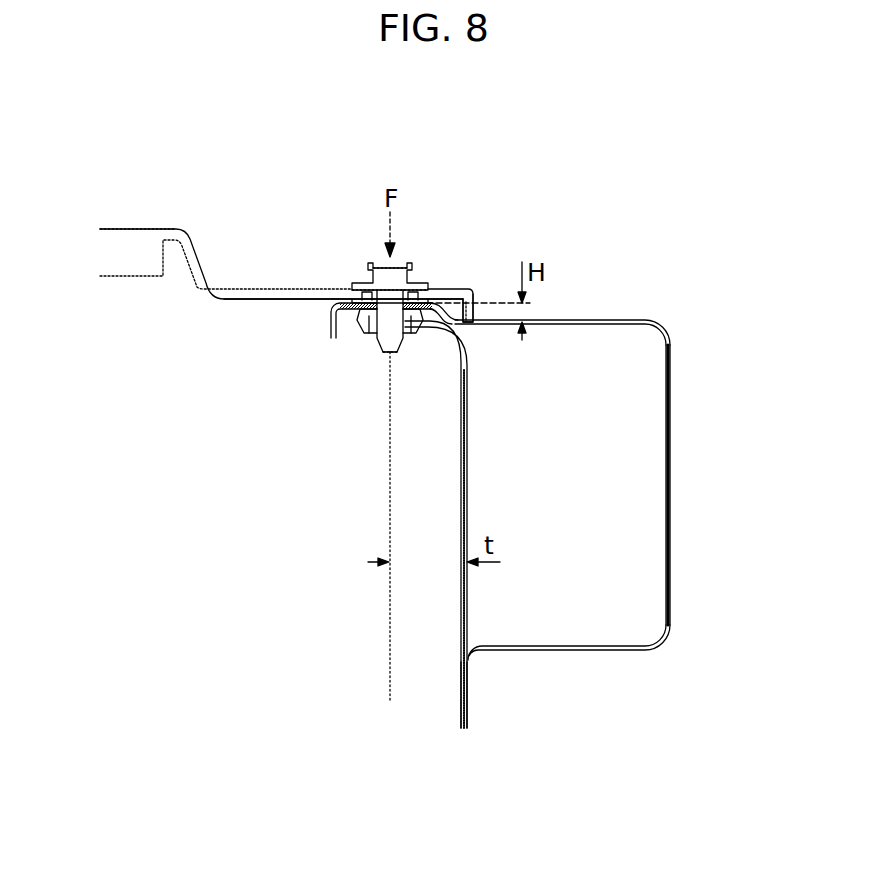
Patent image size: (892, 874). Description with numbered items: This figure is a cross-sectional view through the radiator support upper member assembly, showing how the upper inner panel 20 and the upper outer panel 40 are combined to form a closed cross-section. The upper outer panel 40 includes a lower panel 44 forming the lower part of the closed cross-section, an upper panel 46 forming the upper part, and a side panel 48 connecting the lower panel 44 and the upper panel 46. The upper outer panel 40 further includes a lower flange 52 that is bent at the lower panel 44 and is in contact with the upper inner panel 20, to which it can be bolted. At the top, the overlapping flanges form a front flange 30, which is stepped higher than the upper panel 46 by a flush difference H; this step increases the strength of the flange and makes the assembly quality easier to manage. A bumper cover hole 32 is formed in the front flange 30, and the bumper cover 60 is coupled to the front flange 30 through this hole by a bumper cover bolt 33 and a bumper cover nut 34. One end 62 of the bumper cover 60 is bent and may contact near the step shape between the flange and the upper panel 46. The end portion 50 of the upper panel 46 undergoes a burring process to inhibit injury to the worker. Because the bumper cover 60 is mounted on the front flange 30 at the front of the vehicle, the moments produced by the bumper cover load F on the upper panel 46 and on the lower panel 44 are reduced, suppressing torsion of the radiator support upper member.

The upper inner panel 20 is at (422, 524).
The front flange 30 is at (378, 361).
The bumper cover hole 32 is at (400, 290).
The bumper cover bolt 33 is at (381, 266).
The bumper cover nut 34 is at (352, 311).
The upper outer panel 40 is at (600, 483).
The lower panel 44 is at (585, 650).
The upper panel 46 is at (603, 322).
The side panel 48 is at (670, 548).
The end portion 50 is at (330, 325).
The lower flange 52 is at (468, 703).
The bumper cover 60 is at (272, 298).
The end 62 is at (484, 314).